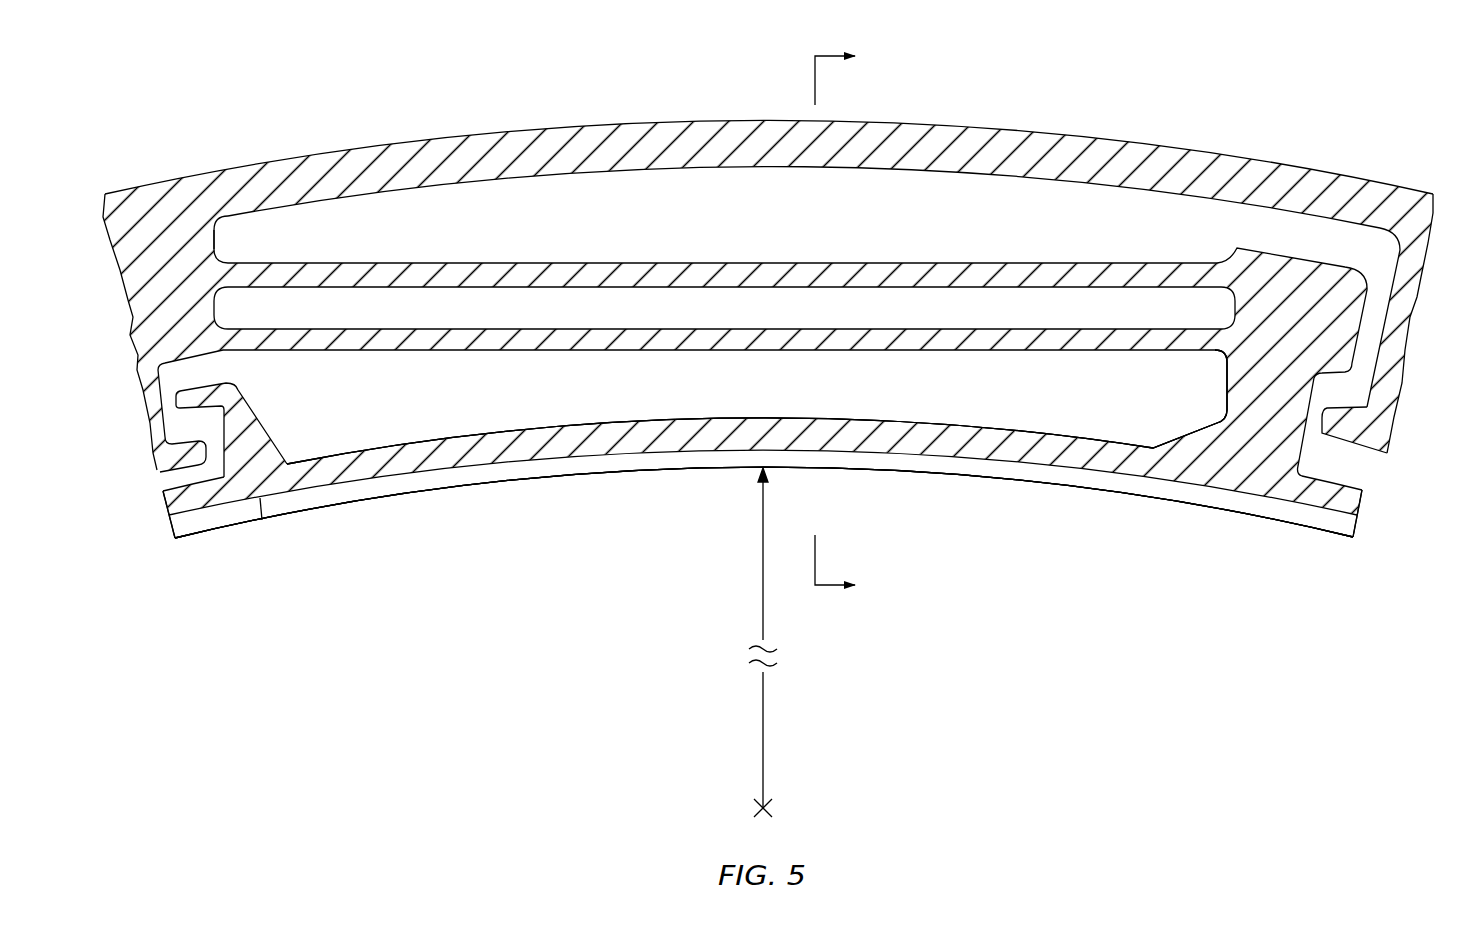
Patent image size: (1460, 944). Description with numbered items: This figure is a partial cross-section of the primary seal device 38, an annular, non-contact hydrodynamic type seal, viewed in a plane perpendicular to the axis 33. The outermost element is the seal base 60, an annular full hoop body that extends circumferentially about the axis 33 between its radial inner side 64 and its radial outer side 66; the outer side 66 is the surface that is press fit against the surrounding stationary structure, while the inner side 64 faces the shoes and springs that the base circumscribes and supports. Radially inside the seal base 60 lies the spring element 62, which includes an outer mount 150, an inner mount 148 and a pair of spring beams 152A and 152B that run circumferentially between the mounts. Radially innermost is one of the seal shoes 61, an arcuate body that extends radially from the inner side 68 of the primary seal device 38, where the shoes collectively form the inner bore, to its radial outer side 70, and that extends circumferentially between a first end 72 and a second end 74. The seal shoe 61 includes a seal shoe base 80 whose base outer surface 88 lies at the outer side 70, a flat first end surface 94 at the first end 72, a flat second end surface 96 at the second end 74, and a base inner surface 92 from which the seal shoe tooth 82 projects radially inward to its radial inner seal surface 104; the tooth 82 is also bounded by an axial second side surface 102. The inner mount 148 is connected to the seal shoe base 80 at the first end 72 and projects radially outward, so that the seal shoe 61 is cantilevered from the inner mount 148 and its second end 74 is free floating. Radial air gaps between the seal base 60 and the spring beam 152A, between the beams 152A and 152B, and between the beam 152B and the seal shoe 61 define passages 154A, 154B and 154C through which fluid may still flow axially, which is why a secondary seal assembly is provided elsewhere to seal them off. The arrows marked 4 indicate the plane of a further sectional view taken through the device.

The primary seal device 38 is at (1262, 141).
The seal base 60 is at (766, 265).
The radial outer side of the seal base 66 is at (633, 122).
The radial inner side of the seal base 64 is at (673, 170).
The spring element 62 is at (724, 332).
The spring beam 152A is at (870, 262).
The spring beam 152B is at (848, 352).
The passage 154A is at (775, 231).
The passage 154B is at (755, 318).
The passage 154C is at (765, 394).
The outer mount 150 is at (165, 302).
The inner mount 148 is at (1358, 356).
The seal shoe base 80 is at (330, 450).
The radial outer side of the seal shoe 70 is at (760, 452).
The base outer surface 88 is at (530, 428).
The axial second side surface 102 is at (620, 458).
The seal shoe tooth 82 is at (755, 547).
The circumferential second end of the seal shoe 74 is at (152, 544).
The second end surface 96 is at (161, 493).
The circumferential first end of the seal shoe 72 is at (1358, 547).
The first end surface 94 is at (1366, 492).
The radial inner side of the primary seal device 68 is at (460, 502).
The radial inner seal surface 104 is at (557, 478).
The seal shoe 61 is at (210, 540).
The base inner surface 92 is at (262, 520).
The axis 33 is at (770, 810).
The section line 4- 4 is at (851, 320).